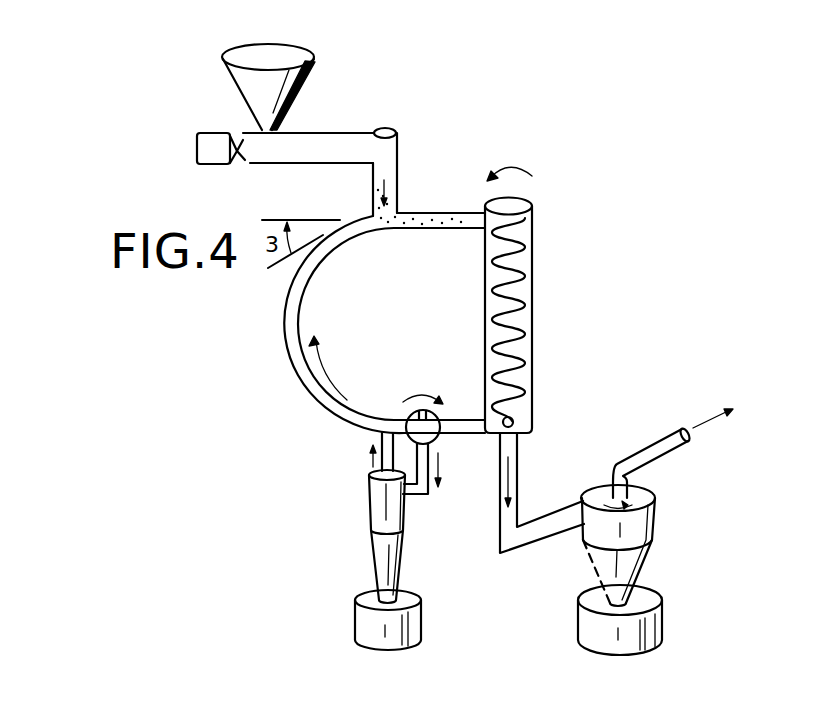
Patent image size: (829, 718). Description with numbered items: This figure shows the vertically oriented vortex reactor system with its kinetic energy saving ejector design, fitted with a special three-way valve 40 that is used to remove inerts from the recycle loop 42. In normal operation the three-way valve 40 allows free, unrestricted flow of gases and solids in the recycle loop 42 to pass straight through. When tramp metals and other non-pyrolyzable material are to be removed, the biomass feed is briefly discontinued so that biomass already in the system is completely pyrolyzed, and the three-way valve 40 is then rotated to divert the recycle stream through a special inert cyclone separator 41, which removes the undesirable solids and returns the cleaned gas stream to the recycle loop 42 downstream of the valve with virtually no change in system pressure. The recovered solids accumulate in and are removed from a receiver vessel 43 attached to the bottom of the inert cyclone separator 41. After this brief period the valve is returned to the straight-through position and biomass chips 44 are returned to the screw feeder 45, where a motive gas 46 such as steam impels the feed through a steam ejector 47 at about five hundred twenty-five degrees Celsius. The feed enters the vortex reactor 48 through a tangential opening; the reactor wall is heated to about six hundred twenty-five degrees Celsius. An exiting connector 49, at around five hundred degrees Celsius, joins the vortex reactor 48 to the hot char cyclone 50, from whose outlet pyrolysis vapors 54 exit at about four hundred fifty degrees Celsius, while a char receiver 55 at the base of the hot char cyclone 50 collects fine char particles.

The 3-way valve 40 is at (408, 415).
The inert cyclone separator 41 is at (368, 517).
The recycle loop 42 is at (288, 326).
The receiver vessel 43 is at (422, 635).
The biomass chips 44 is at (316, 68).
The screw feeder 45 is at (343, 130).
The motive gas 46 is at (370, 218).
The steam ejector 47 is at (432, 232).
The vortex reactor 48 is at (533, 317).
The exiting connector 49 is at (518, 481).
The hot char cyclone 50 is at (655, 543).
The pyrolysis vapors 54 is at (678, 450).
The char receiver 55 is at (663, 636).